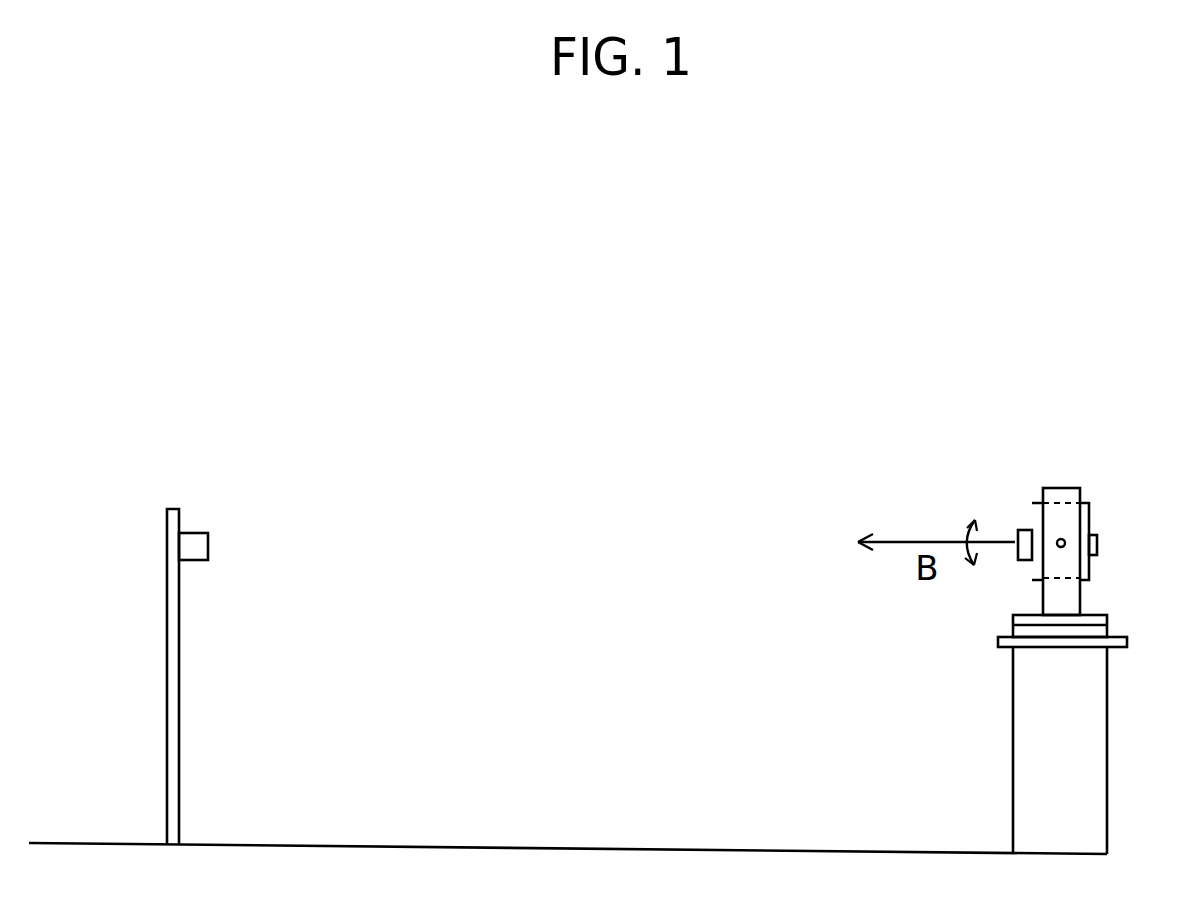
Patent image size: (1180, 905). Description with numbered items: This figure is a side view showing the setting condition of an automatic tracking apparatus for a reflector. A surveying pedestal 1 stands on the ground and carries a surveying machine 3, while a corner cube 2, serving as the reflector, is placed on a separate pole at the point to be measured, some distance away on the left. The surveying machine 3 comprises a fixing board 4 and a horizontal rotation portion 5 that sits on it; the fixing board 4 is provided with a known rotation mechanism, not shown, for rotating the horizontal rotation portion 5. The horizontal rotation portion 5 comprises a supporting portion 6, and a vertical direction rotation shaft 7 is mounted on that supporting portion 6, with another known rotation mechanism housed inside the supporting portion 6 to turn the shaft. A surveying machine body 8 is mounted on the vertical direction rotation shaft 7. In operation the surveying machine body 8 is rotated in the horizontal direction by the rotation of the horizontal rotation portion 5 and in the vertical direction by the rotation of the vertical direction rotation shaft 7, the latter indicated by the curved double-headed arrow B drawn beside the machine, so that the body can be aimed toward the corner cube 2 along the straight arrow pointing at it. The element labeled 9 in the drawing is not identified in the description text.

The surveying pedestal 1 is at (1018, 735).
The corner cube 2 is at (208, 547).
The surveying machine 3 is at (1051, 483).
The fixing board 4 is at (1008, 632).
The horizontal rotation portion 5 is at (1015, 618).
The supporting portion 6 is at (1070, 487).
The vertical direction rotation shaft 7 is at (1065, 538).
The surveying machine body 8 is at (1087, 567).
The vertical adjustment knob 9 is at (1020, 552).